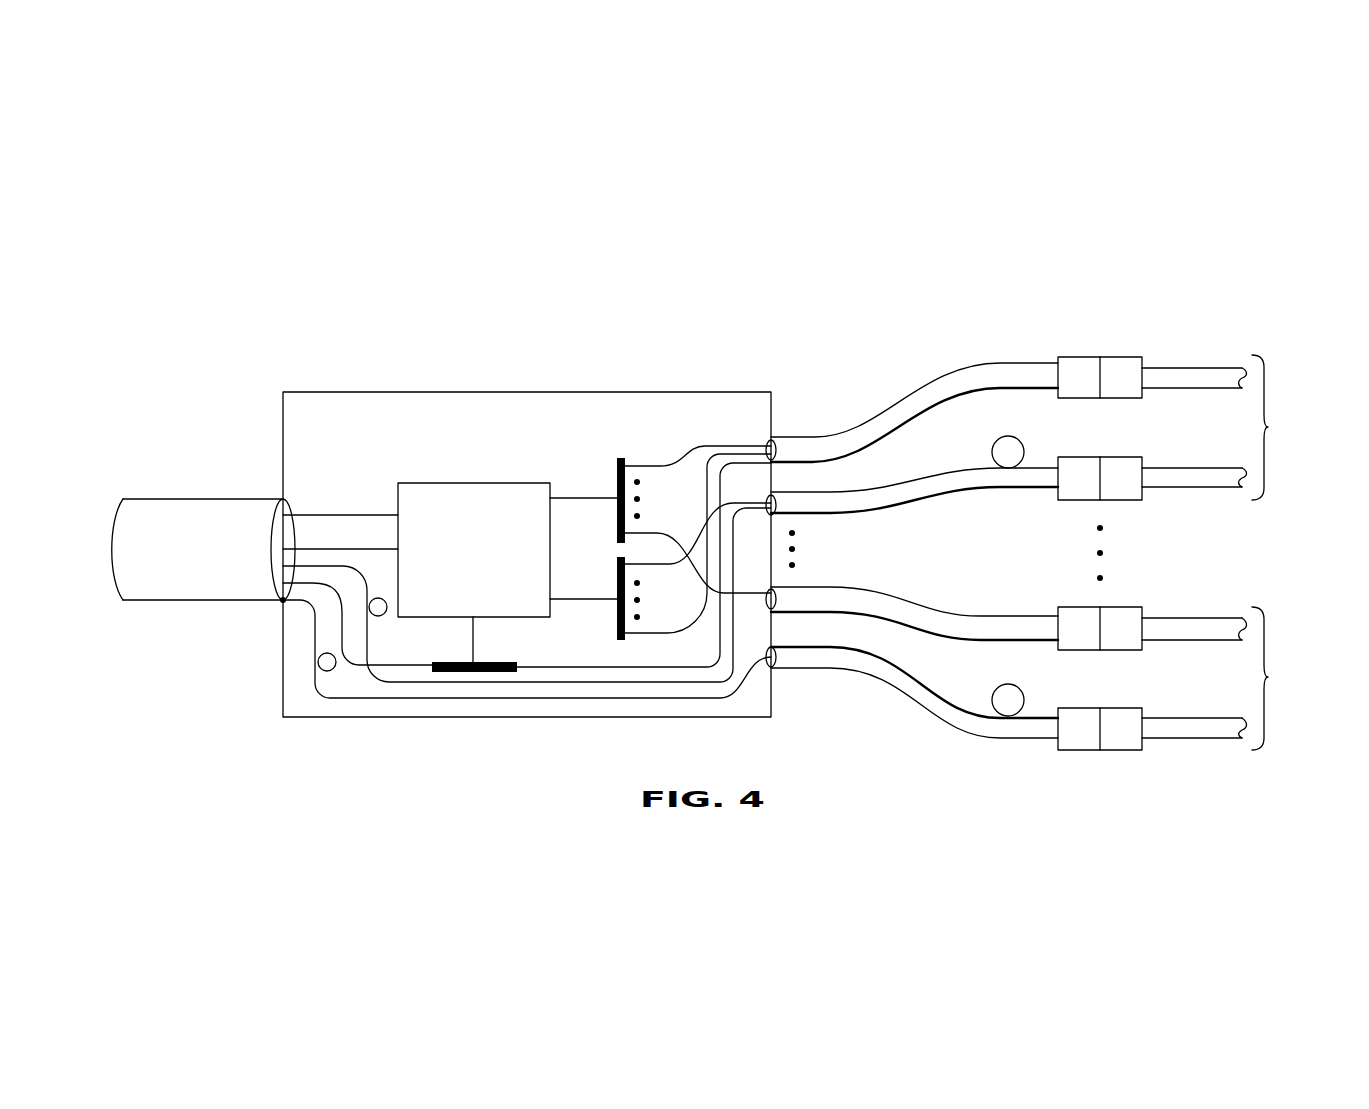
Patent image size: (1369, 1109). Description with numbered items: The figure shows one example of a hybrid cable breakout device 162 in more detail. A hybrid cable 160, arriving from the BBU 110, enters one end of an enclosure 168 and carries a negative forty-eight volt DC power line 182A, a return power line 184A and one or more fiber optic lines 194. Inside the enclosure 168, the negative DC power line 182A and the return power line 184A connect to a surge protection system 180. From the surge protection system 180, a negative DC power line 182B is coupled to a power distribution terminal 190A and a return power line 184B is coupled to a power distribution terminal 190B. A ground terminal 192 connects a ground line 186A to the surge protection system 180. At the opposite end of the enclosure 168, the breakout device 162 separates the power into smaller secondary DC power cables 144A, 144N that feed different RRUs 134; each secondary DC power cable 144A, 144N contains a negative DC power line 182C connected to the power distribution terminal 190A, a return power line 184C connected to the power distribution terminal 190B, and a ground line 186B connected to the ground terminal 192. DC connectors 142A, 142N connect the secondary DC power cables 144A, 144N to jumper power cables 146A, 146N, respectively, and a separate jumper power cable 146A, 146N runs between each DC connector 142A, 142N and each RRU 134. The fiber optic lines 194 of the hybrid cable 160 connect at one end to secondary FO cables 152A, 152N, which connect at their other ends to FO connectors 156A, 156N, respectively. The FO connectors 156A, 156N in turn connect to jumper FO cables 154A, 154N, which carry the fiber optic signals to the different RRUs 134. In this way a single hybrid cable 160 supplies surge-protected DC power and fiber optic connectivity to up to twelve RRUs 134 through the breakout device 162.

The BBU 110 is at (81, 550).
The RRU 134 is at (1298, 552).
The DC connector 142A is at (1080, 399).
The DC connector 142N is at (1080, 651).
The secondary DC power cable 144A is at (915, 388).
The secondary DC power cable 144N is at (966, 614).
The jumper power cable 146A is at (1203, 366).
The jumper power cable 146N is at (1203, 616).
The secondary FO cable 152A is at (907, 500).
The secondary FO cable 152N is at (898, 700).
The jumper FO cable 154A is at (1203, 466).
The jumper FO cable 154N is at (1203, 716).
The FO connector 156A is at (1080, 501).
The FO connector 156N is at (1080, 751).
The hybrid cable 160 is at (203, 601).
The hybrid cable breakout device 162 is at (518, 312).
The enclosure 168 is at (372, 391).
The surge protection system 180 is at (477, 482).
The −48 VDC power line 182A is at (313, 514).
The −48 VDC power line 182B is at (586, 497).
The −48 VDC power line 182C is at (686, 455).
The return power line 184A is at (287, 548).
The return power line 184B is at (586, 598).
The return power line 184C is at (667, 562).
The ground line 186A is at (398, 680).
The ground line 186B is at (680, 696).
The power distribution terminal 190A is at (617, 457).
The power distribution terminal 190B is at (616, 633).
The ground terminal 192 is at (485, 673).
The fiber optic lines 194 is at (315, 638).